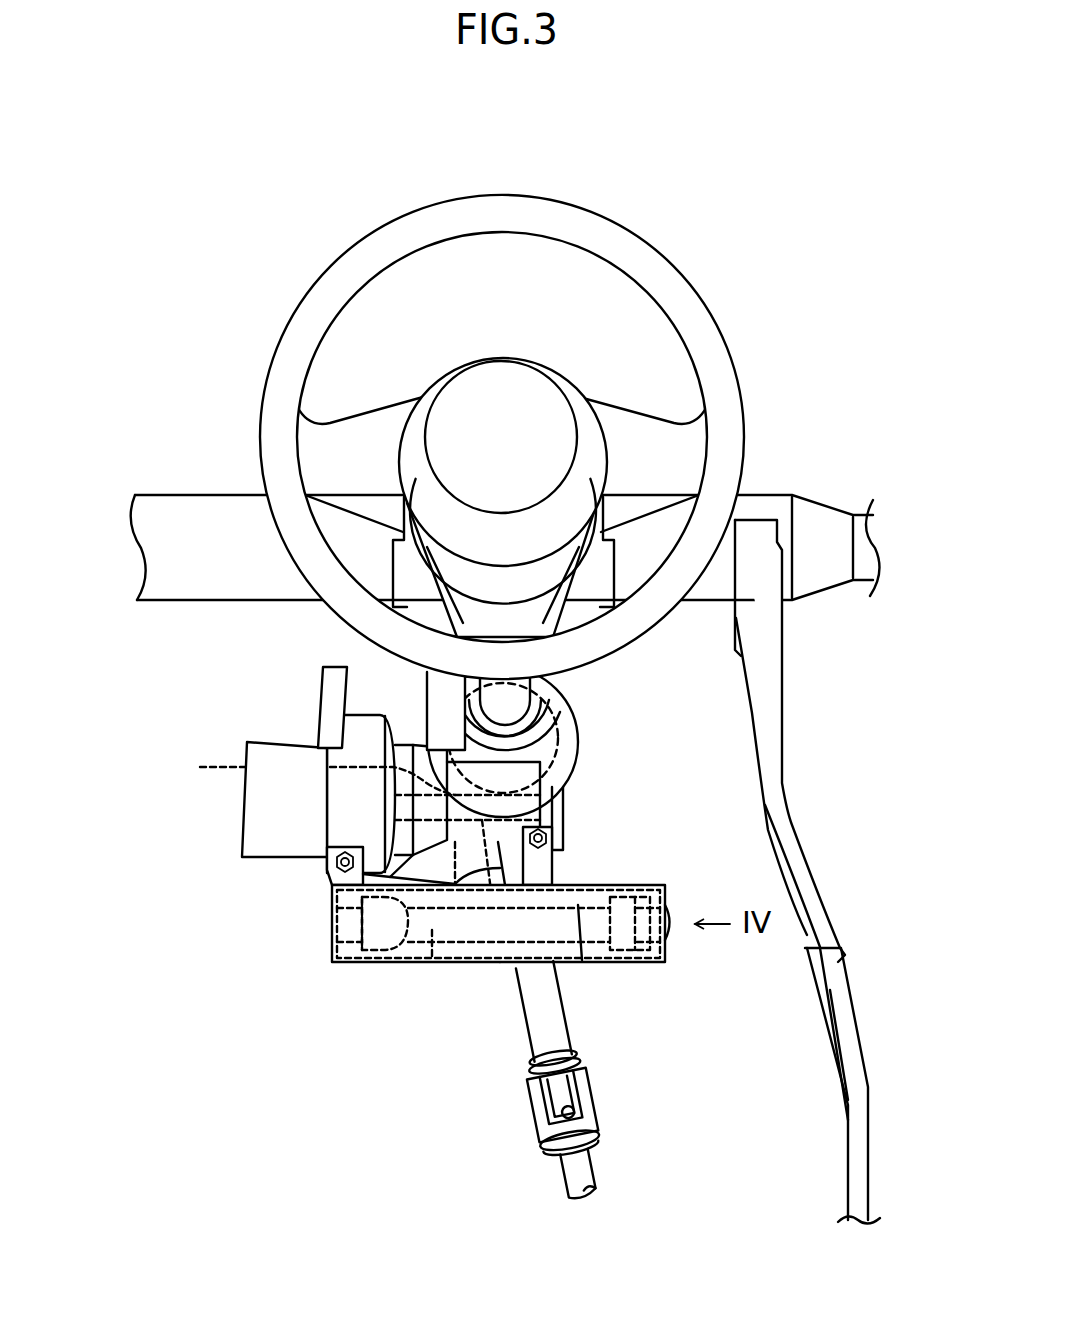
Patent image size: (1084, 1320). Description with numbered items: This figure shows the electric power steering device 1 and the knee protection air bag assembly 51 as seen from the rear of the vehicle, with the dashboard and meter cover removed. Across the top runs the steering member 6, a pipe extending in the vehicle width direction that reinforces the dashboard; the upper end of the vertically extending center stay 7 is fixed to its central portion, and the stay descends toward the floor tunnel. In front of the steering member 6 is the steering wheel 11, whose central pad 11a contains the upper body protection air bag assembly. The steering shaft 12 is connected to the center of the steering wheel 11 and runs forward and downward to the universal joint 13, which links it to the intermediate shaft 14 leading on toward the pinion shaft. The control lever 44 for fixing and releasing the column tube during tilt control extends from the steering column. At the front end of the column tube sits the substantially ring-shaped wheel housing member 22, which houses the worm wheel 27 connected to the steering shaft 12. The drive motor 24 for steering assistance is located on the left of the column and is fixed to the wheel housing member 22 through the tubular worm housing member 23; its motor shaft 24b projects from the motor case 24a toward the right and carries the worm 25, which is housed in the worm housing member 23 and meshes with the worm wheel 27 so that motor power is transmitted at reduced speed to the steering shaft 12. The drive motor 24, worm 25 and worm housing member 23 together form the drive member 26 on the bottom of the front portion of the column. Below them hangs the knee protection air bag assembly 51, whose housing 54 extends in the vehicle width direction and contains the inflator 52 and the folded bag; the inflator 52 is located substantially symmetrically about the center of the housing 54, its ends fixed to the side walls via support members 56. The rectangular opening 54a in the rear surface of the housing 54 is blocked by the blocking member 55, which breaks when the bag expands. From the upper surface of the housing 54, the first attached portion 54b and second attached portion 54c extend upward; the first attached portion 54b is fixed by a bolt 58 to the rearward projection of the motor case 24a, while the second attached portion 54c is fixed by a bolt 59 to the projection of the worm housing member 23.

The electric power steering device 1 is at (532, 414).
The steering member 6 is at (184, 494).
The center stay 7 is at (783, 660).
The steering wheel 11 is at (703, 300).
The pad 11a is at (500, 378).
The steering shaft 12 is at (530, 1035).
The universal joint 13 is at (600, 1102).
The intermediate shaft 14 is at (560, 1176).
The wheel housing member 22 is at (578, 715).
The worm housing member 23 is at (455, 962).
The drive motor 24 is at (329, 761).
The motor case 24a is at (255, 800).
The motor shaft 24b is at (338, 794).
The worm 25 is at (494, 962).
The drive member 26 is at (333, 667).
The worm wheel 27 is at (560, 752).
The control lever 44 is at (372, 712).
The knee protection air bag assembly 51 is at (454, 977).
The inflator 52 is at (437, 962).
The housing 54 is at (485, 859).
The opening 54a is at (590, 893).
The first attached portion 54b is at (330, 882).
The second attached portion 54c is at (545, 860).
The blocking member 55 is at (582, 963).
The support members 56 is at (383, 962).
The bolt 58 is at (325, 851).
The bolt 59 is at (540, 830).